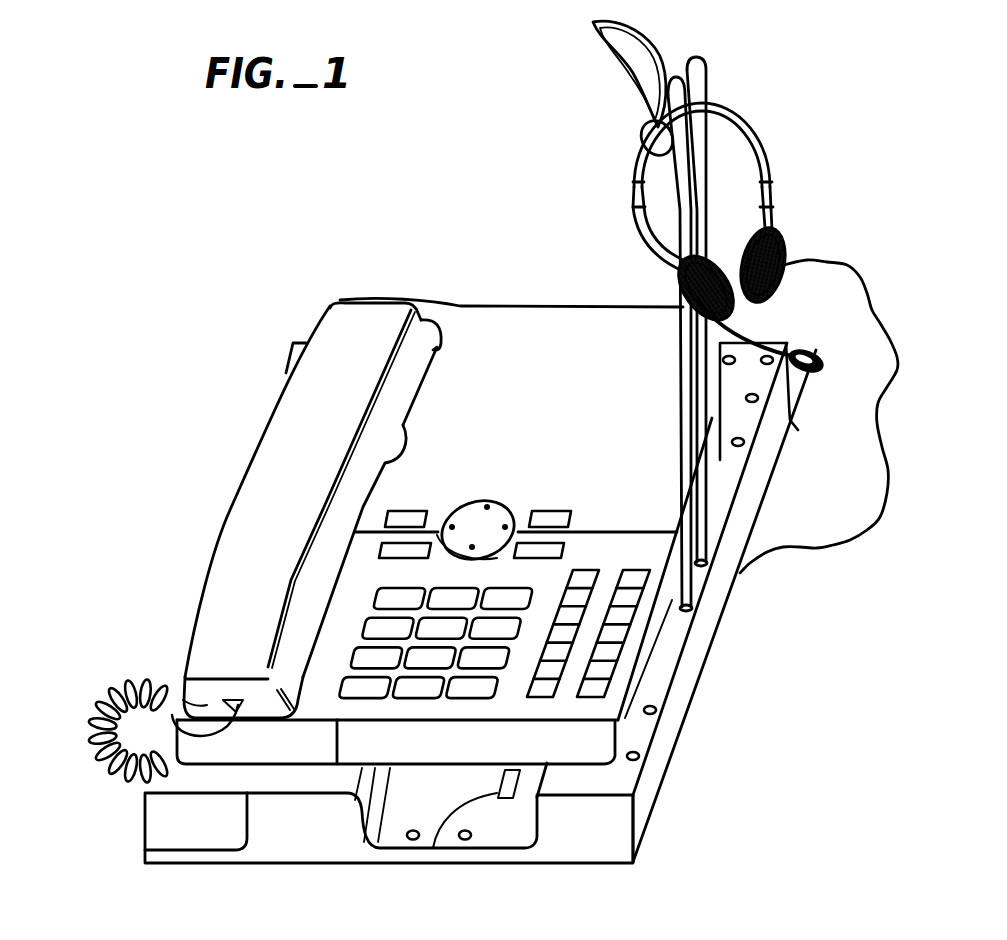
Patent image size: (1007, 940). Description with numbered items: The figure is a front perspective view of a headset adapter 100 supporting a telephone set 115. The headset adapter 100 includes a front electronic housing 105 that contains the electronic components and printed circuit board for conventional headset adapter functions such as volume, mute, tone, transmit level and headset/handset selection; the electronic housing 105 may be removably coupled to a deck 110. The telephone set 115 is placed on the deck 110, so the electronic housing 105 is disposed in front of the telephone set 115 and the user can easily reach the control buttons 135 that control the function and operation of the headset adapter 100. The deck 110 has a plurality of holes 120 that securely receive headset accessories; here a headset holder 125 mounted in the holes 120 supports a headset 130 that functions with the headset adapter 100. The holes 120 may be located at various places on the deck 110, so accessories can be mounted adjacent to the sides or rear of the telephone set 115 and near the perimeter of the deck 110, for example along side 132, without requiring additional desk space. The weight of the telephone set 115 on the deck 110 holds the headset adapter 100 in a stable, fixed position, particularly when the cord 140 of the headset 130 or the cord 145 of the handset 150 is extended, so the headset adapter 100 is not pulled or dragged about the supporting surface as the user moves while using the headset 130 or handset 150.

The headset adapter 100 is at (145, 787).
The front electronic housing 105 is at (281, 843).
The deck 110 is at (713, 613).
The telephone set 115 is at (548, 322).
The holes 120 is at (735, 362).
The headset holder 125 is at (630, 74).
The headset 130 is at (772, 160).
The side 132 is at (645, 807).
The control buttons 135 is at (463, 840).
The cord 140 is at (823, 256).
The cord 145 is at (157, 683).
The handset 150 is at (264, 500).